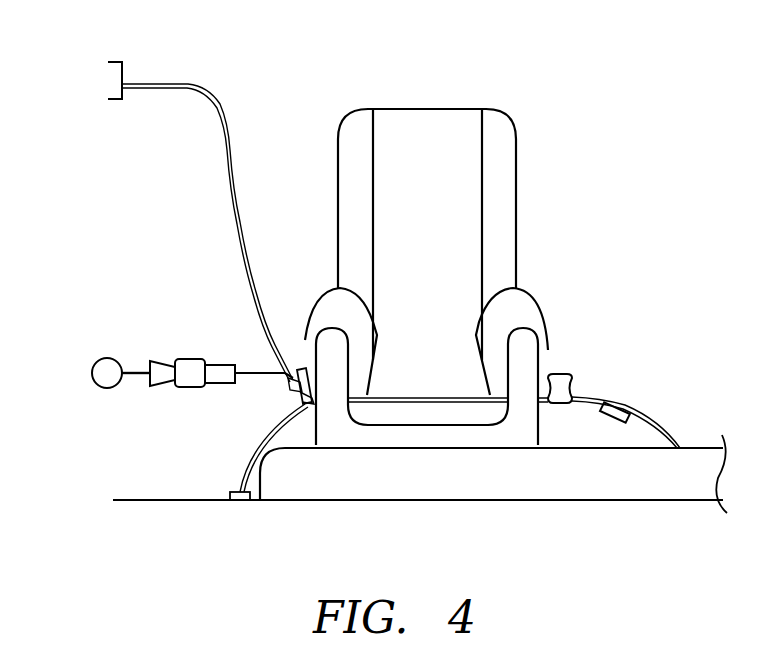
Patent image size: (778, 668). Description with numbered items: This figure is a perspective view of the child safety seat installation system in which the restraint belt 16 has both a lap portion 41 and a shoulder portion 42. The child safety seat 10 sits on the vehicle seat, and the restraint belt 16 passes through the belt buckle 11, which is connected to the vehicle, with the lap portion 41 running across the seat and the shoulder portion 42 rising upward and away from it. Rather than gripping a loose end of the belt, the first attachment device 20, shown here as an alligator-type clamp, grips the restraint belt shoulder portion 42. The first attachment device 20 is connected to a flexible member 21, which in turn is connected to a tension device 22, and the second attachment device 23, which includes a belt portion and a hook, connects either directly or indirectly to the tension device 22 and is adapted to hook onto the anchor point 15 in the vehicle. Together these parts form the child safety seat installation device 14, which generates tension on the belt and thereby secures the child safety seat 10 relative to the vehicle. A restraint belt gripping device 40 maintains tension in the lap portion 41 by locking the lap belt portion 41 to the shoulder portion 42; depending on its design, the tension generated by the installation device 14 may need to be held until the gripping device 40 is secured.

The child safety seat 10 is at (516, 178).
The belt buckle 11 is at (625, 402).
The tension device 14 is at (153, 355).
The anchor point 15 is at (92, 374).
The restraint belt 16 is at (592, 398).
The first attachment device 20 is at (299, 350).
The flexible member 21 is at (249, 371).
The tension device 22 is at (190, 358).
The second attachment device 23 is at (150, 360).
The restraint belt gripping device 40 is at (560, 374).
The lap portion 41 is at (245, 470).
The shoulder portion 42 is at (240, 108).